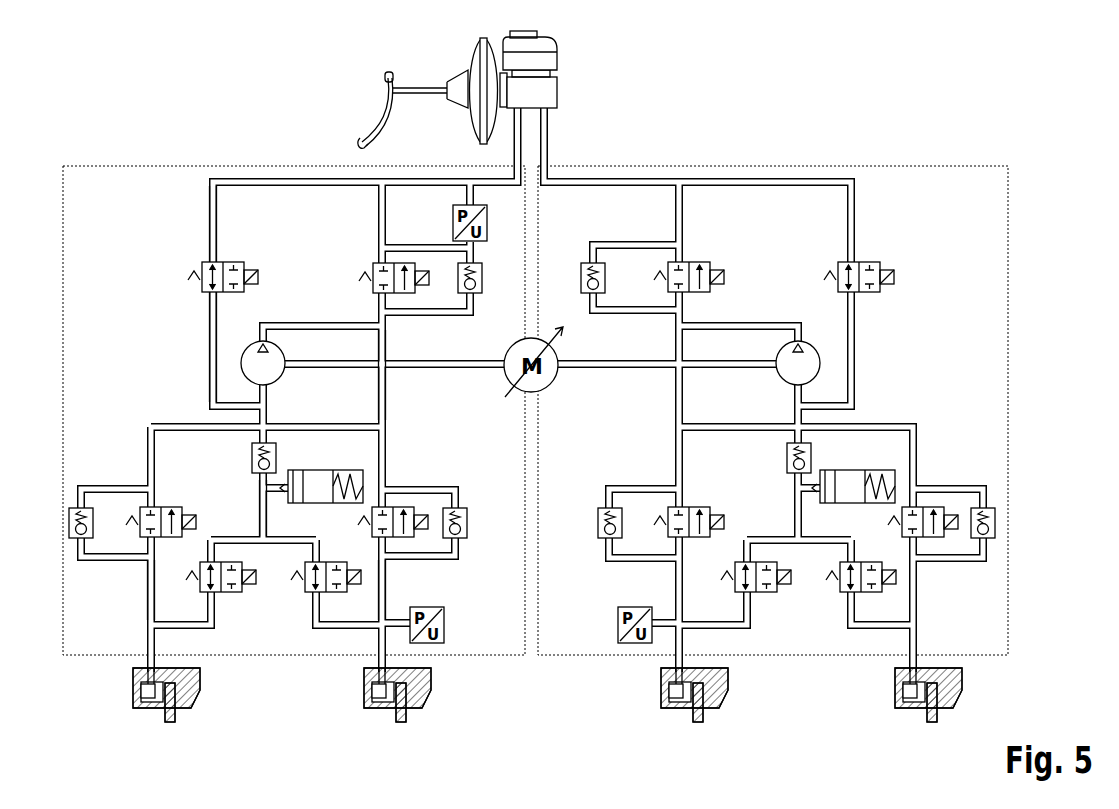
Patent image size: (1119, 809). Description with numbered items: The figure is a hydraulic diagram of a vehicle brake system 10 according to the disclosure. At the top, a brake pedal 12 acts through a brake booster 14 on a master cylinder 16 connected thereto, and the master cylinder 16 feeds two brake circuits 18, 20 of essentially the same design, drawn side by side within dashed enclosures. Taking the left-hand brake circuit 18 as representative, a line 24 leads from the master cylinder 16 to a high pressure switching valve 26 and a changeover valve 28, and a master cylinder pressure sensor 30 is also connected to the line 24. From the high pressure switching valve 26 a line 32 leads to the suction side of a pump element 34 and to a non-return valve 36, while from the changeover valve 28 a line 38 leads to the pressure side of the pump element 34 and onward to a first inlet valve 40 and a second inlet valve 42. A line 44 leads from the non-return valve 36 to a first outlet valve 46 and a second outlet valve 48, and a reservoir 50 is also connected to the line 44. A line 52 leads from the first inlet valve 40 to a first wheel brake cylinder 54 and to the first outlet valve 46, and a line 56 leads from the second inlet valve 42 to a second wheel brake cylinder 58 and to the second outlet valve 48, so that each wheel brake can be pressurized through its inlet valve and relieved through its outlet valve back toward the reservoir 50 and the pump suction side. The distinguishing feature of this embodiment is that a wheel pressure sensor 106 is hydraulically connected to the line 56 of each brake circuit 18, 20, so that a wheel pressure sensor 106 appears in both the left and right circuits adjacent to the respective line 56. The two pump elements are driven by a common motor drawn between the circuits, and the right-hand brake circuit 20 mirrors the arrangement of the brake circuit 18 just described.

The vehicle brake system 10 is at (175, 104).
The brake pedal 12 is at (365, 130).
The brake booster 14 is at (475, 75).
The master cylinder 16 is at (547, 92).
The brake circuit 18 is at (108, 165).
The brake circuit 20 is at (953, 165).
The line 24 is at (209, 215).
The high pressure switching valve 26 is at (202, 290).
The changeover valve 28 is at (378, 265).
The master cylinder pressure sensor 30 is at (452, 222).
The line 32 is at (209, 362).
The pump element 34 is at (280, 380).
The non-return valve 36 is at (252, 460).
The line 38 is at (385, 410).
The first inlet valve 40 is at (140, 512).
The second inlet valve 42 is at (410, 528).
The line 44 is at (278, 542).
The first outlet valve 46 is at (240, 592).
The second outlet valve 48 is at (322, 592).
The reservoir 50 is at (362, 475).
The line 52 is at (147, 610).
The first wheel brake cylinder 54 is at (133, 698).
The line 56 is at (385, 580).
The second wheel brake cylinder 58 is at (432, 696).
The wheel pressure sensor 106 is at (443, 620).